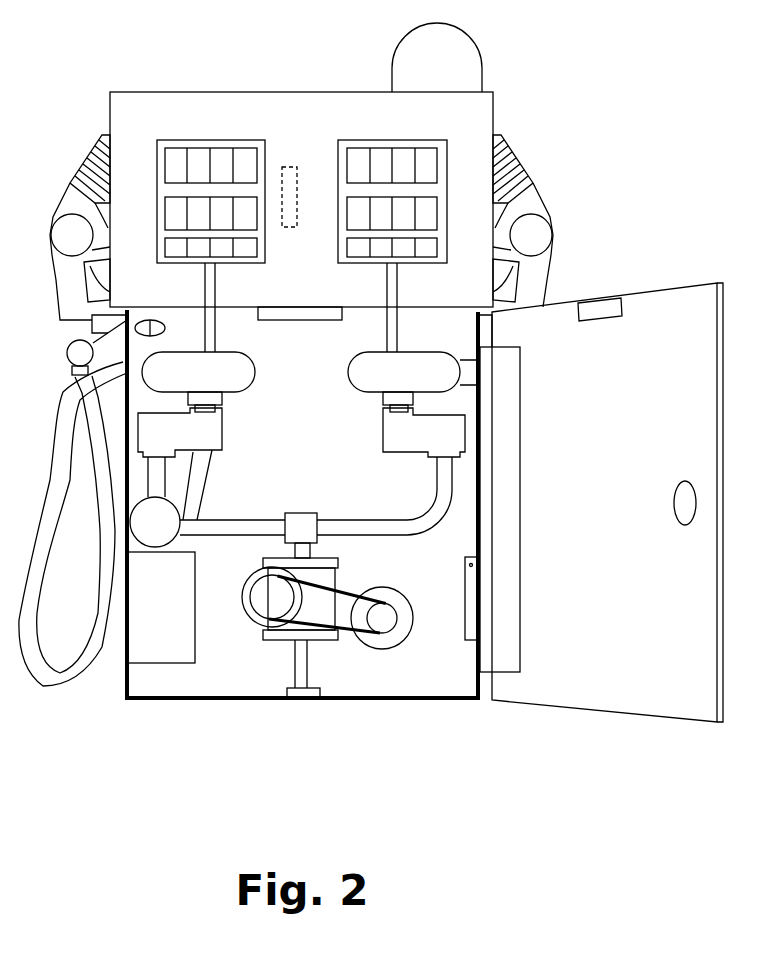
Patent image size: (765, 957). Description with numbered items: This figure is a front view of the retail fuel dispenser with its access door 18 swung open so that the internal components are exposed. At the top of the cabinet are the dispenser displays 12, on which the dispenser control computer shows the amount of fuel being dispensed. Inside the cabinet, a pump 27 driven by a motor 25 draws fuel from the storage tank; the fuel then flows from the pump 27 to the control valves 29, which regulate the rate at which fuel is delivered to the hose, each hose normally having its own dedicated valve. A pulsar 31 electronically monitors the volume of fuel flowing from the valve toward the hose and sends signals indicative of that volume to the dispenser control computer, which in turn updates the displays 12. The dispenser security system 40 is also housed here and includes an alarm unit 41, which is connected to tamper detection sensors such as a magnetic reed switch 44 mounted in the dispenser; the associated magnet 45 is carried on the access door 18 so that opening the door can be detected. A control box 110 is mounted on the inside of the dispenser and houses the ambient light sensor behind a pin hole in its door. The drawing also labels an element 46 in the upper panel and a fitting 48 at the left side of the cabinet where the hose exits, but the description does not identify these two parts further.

The dispenser displays 12 is at (216, 136).
The card reader 46 is at (297, 166).
The magnetic reed switch 44 is at (284, 306).
The magnet 45 is at (598, 300).
The hose fitting 48 is at (67, 355).
The pulsar 31 is at (343, 361).
The control valves 29 is at (376, 431).
The alarm unit 41 is at (175, 628).
The dispenser security system 40 is at (162, 672).
The pump 27 is at (252, 617).
The motor 25 is at (397, 647).
The control box 110 is at (472, 630).
The access door 18 is at (604, 660).